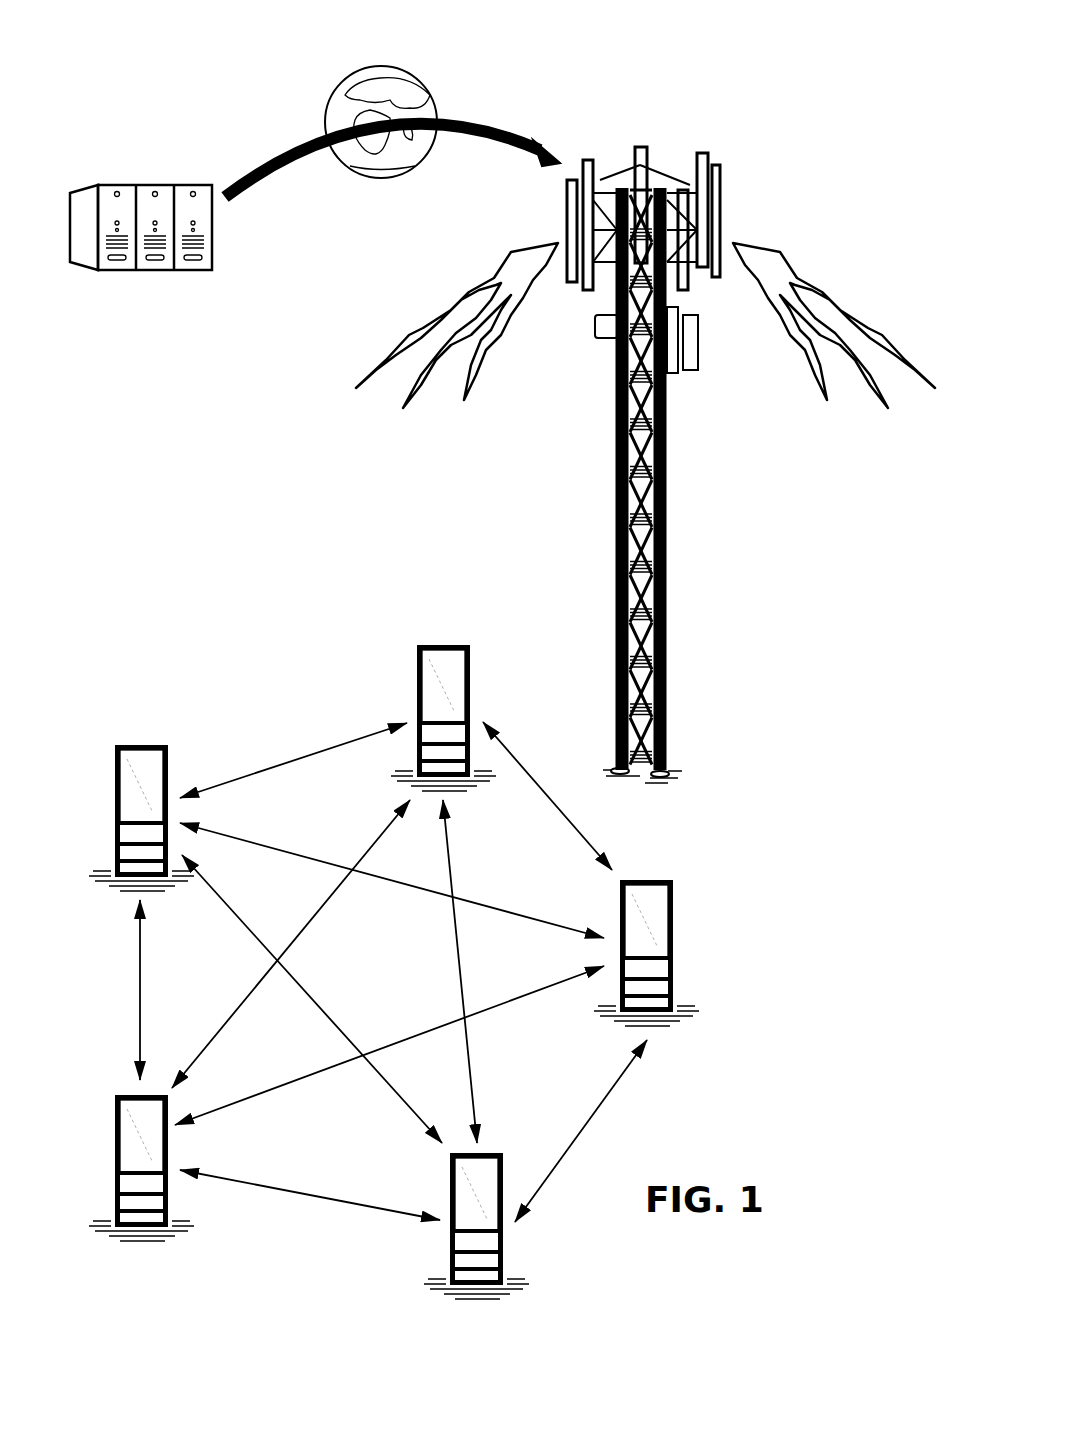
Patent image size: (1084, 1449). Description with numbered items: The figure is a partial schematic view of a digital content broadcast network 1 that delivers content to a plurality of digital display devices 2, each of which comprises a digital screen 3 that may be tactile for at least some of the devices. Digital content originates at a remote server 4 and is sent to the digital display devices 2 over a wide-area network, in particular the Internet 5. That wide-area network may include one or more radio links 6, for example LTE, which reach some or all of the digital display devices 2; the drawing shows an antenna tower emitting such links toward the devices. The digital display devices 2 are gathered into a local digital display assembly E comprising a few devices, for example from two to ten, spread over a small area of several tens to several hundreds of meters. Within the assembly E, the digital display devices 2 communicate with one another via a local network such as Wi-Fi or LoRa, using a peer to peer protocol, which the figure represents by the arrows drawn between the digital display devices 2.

The digital content broadcast network 1 is at (860, 154).
The digital display device 2 is at (153, 880).
The digital screen 3 is at (132, 795).
The remote server 4 is at (122, 185).
The Internet 5 is at (362, 72).
The radio link 6 is at (737, 210).
The local digital display assembly E is at (667, 831).